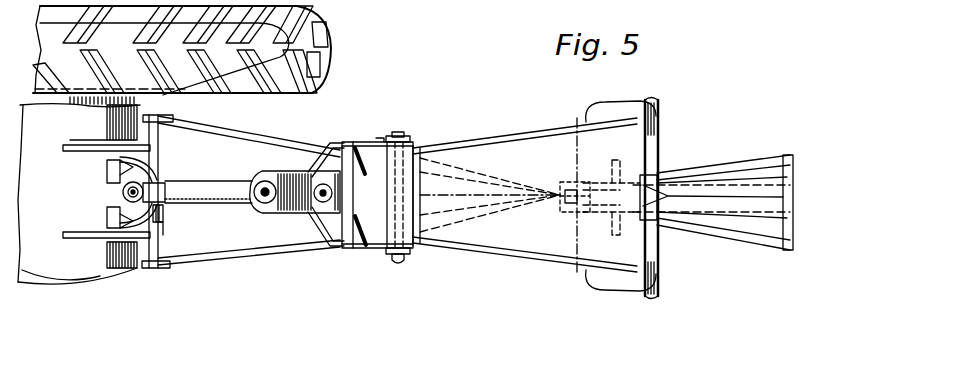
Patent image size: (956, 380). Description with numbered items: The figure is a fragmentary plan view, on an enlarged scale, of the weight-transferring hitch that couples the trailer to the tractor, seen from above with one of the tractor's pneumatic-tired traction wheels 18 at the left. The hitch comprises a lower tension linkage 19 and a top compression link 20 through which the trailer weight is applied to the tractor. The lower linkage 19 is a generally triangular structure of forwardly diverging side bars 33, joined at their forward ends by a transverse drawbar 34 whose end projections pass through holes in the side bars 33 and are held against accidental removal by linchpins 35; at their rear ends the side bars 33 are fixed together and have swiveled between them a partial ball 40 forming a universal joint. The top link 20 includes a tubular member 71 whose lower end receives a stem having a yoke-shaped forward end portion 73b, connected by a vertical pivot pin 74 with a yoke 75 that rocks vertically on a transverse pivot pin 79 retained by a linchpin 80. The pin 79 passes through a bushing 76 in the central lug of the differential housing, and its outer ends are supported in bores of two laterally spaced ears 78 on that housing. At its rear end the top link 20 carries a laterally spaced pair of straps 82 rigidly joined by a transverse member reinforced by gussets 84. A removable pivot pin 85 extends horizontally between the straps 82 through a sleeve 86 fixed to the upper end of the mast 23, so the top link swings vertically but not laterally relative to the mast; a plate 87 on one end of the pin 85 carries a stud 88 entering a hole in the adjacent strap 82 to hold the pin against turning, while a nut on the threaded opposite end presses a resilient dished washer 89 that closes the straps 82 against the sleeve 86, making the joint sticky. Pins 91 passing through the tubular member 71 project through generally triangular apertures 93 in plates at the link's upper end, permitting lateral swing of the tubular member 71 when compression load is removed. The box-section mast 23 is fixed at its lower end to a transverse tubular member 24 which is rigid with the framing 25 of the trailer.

The traction wheels 18 is at (306, 91).
The lower tension linkage 19 is at (213, 276).
The top compression link 20 is at (213, 210).
The mast 23 is at (530, 127).
The transverse tubular member 24 is at (656, 128).
The framing 25 is at (743, 142).
The side bars 33 is at (262, 130).
The transverse drawbar 34 is at (160, 225).
The linchpins 35 is at (158, 116).
The partial ball 40 is at (565, 204).
The tubular member 71 is at (199, 206).
The forward end portion of stem 73b is at (170, 178).
The vertical pivot pin 74 is at (122, 192).
The yoke 75 is at (169, 237).
The bushing 76 is at (106, 174).
The ears 78 is at (90, 151).
The transverse pivot pin 79 is at (117, 137).
The linchpin 80 is at (110, 254).
The straps 82 is at (370, 118).
The gussets 84 is at (368, 196).
The removable pivot pin 85 is at (406, 145).
The sleeve 86 is at (385, 210).
The plate 87 is at (398, 132).
The stud 88 is at (382, 139).
The resilient dished washer 89 is at (404, 262).
The pins 91 is at (274, 190).
The apertures 93 is at (262, 210).